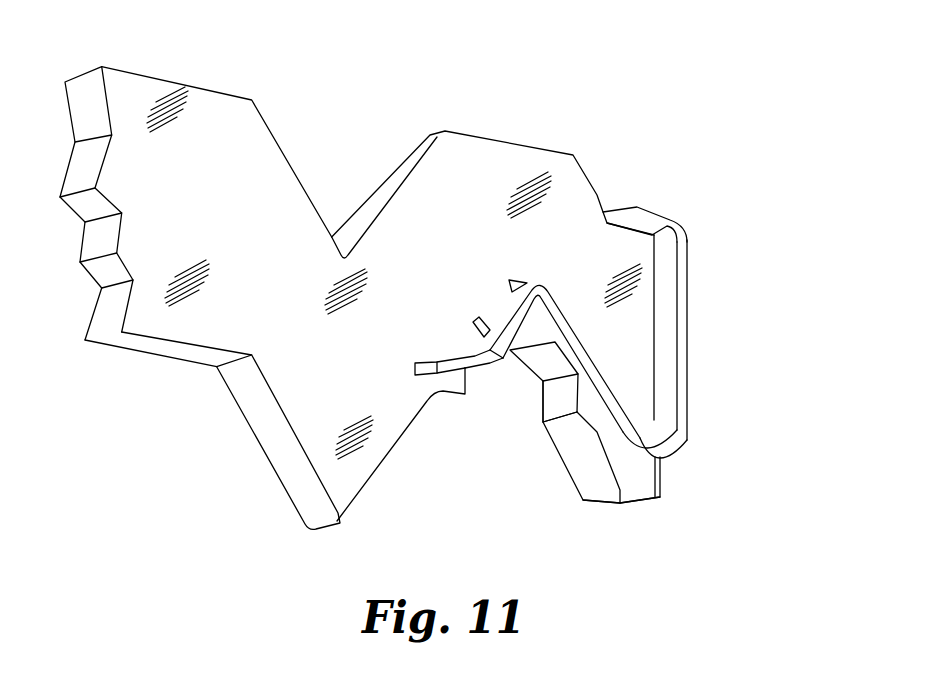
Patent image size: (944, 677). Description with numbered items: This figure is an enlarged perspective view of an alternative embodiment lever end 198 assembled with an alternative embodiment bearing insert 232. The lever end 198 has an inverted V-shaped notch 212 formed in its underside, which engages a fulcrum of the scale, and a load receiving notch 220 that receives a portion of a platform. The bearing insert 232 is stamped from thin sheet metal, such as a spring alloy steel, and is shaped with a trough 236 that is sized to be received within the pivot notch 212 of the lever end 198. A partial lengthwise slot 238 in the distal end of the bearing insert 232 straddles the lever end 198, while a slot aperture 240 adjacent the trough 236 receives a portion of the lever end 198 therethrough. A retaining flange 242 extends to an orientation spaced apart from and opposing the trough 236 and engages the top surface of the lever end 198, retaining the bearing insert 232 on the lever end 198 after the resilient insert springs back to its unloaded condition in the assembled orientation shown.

The lever end 198 is at (509, 143).
The load receiving notch 220 is at (285, 149).
The bearing insert 232 is at (690, 264).
The retaining flange 242 is at (618, 213).
The partial lengthwise slot 238 is at (467, 340).
The trough 236 is at (535, 318).
The inverted V-shaped notch 212 is at (557, 395).
The slot aperture 240 is at (597, 432).